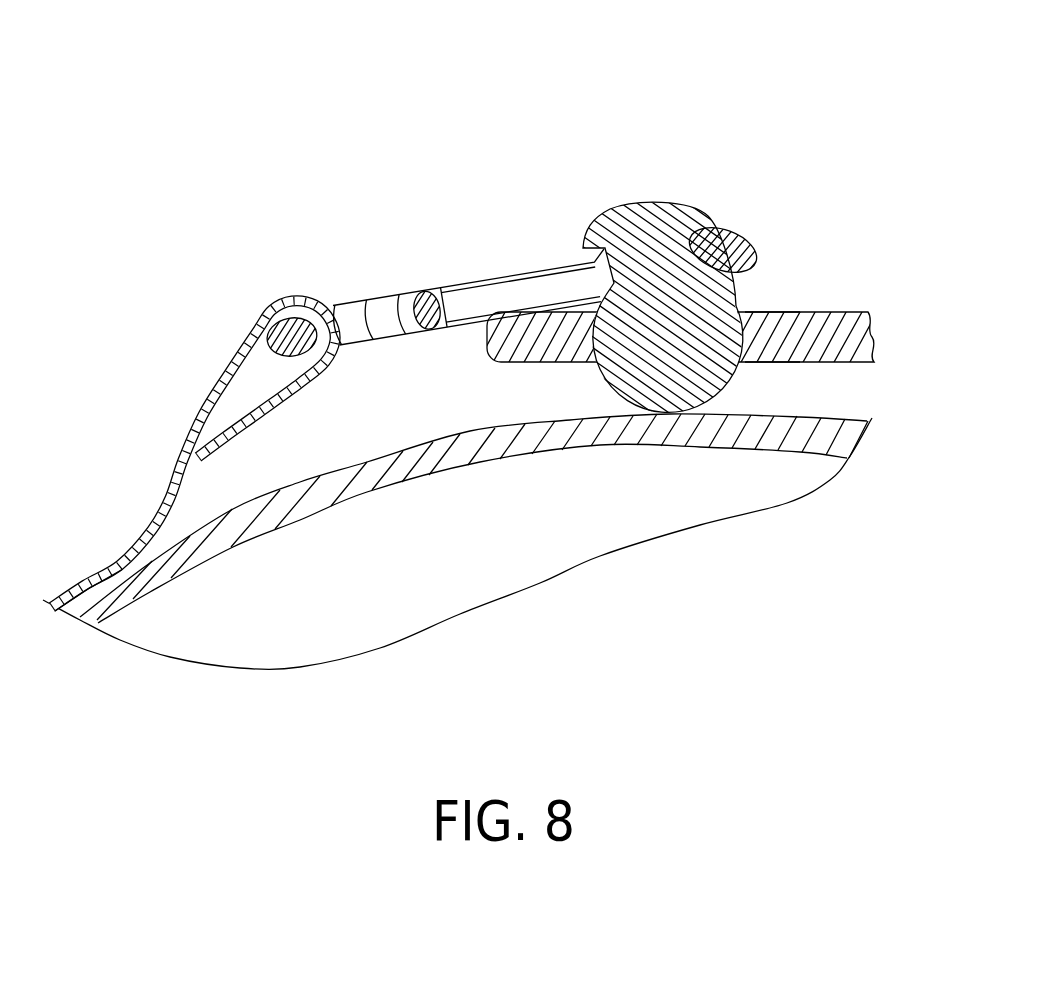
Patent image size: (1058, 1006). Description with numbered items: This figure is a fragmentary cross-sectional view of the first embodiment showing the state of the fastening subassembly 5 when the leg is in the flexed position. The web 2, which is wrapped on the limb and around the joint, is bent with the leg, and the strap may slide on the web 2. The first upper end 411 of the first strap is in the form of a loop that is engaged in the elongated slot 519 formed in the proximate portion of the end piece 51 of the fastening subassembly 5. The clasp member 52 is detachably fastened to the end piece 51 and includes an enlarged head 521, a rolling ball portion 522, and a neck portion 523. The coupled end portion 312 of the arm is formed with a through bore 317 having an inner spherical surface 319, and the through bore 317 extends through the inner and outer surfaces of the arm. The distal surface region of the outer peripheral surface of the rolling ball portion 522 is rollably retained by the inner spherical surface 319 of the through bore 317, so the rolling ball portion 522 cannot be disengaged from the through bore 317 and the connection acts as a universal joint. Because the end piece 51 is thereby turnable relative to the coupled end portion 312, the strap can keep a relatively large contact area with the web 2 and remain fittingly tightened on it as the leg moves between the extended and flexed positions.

The web 2 is at (191, 456).
The first upper end 411 is at (113, 567).
The fastening subassembly 5 is at (555, 263).
The end piece 51 is at (418, 285).
The elongated slot 519 is at (363, 305).
The clasp member 52 is at (654, 288).
The enlarged head 521 is at (665, 215).
The rolling ball portion 522 is at (645, 368).
The neck portion 523 is at (663, 253).
The coupled end portion 312 is at (685, 322).
The through bore 317 is at (758, 330).
The inner spherical surface 319 is at (742, 340).